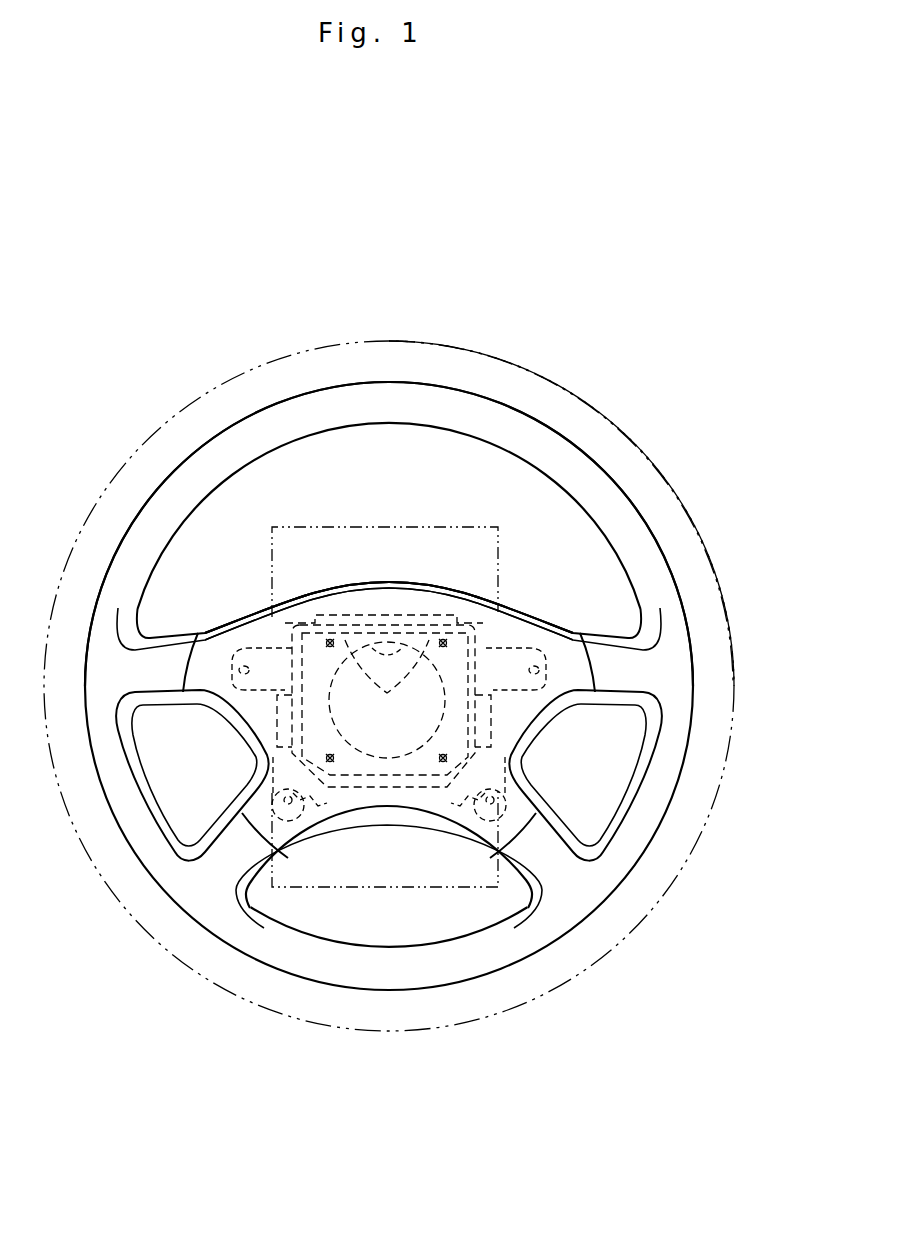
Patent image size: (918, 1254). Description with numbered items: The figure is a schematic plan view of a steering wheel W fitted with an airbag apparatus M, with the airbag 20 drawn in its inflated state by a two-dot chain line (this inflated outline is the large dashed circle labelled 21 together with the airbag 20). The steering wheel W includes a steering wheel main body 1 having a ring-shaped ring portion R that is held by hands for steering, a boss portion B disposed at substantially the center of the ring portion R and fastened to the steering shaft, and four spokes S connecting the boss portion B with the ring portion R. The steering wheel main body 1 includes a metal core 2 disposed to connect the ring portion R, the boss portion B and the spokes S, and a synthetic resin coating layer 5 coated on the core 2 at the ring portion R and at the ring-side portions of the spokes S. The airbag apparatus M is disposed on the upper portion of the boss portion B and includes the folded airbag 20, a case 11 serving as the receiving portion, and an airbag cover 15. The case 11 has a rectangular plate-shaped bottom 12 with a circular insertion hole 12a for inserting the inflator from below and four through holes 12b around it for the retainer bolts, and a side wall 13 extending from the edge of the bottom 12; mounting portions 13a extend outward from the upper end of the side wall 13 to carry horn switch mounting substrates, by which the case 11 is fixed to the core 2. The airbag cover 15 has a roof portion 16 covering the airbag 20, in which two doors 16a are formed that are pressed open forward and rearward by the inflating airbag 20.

The steering wheel main body 1 is at (214, 423).
The core 2 is at (332, 967).
The coating layer 5 is at (655, 578).
The case 11 is at (393, 818).
The bottom 12 is at (360, 772).
The insertion hole 12a is at (400, 643).
The through holes 12b is at (387, 699).
The side wall 13 is at (490, 633).
The mounting portions 13a is at (240, 653).
The airbag cover 15 is at (389, 557).
The roof portion 16 is at (263, 601).
The doors 16a is at (365, 636).
The airbag 20 is at (582, 513).
The cover outer skin 21 is at (682, 496).
The boss portion B is at (509, 596).
The airbag apparatus M is at (441, 576).
The ring portion R is at (364, 380).
The spokes S is at (157, 716).
The steering wheel W is at (549, 398).